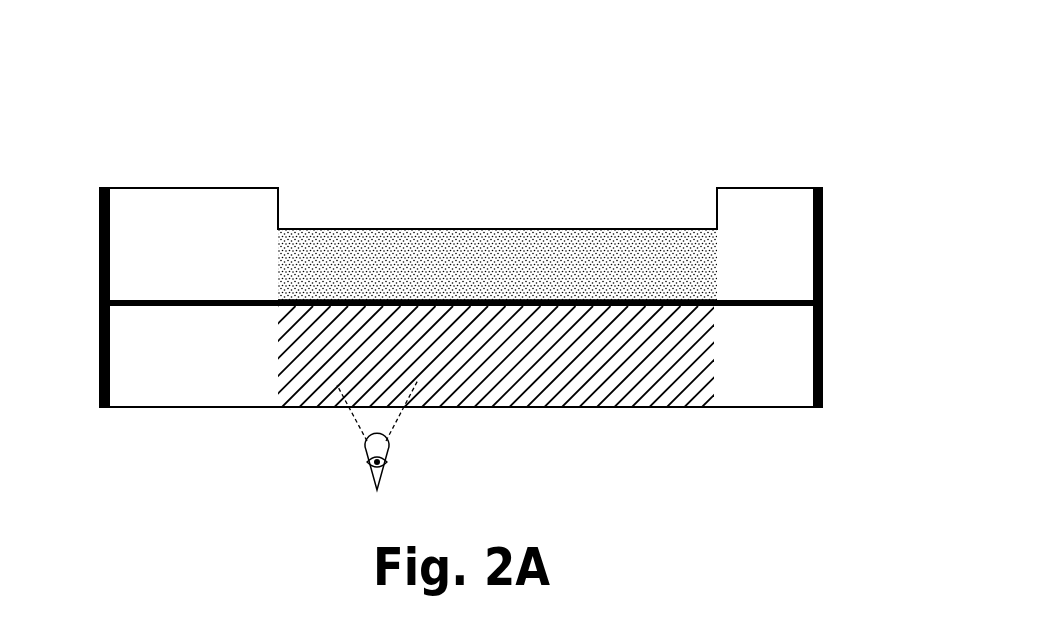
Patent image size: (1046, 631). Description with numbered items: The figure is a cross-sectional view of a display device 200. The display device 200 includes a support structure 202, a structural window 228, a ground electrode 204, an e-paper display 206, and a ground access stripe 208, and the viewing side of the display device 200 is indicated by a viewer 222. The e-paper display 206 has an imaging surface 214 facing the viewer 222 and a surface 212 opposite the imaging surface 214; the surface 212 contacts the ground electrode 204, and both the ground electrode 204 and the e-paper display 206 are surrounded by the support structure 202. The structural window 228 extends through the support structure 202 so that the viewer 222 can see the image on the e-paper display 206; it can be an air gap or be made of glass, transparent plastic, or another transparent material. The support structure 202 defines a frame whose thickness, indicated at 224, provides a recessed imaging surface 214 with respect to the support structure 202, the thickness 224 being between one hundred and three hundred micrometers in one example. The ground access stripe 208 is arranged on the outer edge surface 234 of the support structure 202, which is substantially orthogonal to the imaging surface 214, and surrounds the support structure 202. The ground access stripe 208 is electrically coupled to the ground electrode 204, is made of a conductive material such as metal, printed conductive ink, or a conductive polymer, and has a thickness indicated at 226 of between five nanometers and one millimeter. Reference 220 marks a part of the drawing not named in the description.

The display device 200 is at (556, 96).
The support structure 202 is at (738, 387).
The ground electrode 204 is at (793, 300).
The e-paper display 206 is at (590, 245).
The ground access stripe 208 is at (100, 232).
The surface 212 is at (657, 300).
The imaging surface 214 is at (497, 229).
The top surface of side block 220 is at (797, 188).
The viewer 222 is at (388, 462).
The thickness 224 is at (763, 270).
The thickness 226 is at (60, 125).
The structural window 228 is at (603, 387).
The outer edge surface 234 is at (110, 378).